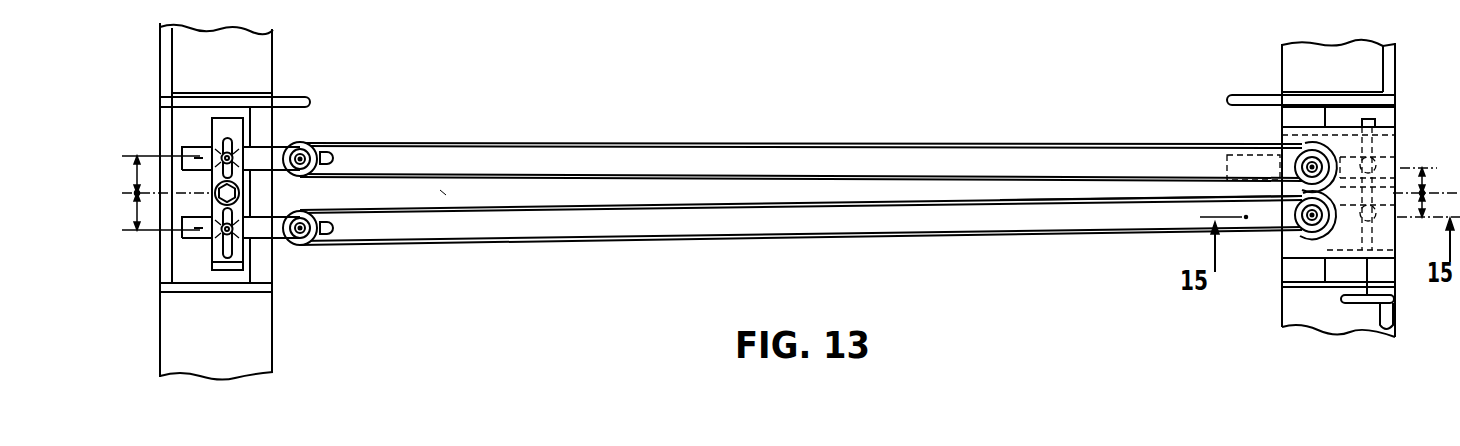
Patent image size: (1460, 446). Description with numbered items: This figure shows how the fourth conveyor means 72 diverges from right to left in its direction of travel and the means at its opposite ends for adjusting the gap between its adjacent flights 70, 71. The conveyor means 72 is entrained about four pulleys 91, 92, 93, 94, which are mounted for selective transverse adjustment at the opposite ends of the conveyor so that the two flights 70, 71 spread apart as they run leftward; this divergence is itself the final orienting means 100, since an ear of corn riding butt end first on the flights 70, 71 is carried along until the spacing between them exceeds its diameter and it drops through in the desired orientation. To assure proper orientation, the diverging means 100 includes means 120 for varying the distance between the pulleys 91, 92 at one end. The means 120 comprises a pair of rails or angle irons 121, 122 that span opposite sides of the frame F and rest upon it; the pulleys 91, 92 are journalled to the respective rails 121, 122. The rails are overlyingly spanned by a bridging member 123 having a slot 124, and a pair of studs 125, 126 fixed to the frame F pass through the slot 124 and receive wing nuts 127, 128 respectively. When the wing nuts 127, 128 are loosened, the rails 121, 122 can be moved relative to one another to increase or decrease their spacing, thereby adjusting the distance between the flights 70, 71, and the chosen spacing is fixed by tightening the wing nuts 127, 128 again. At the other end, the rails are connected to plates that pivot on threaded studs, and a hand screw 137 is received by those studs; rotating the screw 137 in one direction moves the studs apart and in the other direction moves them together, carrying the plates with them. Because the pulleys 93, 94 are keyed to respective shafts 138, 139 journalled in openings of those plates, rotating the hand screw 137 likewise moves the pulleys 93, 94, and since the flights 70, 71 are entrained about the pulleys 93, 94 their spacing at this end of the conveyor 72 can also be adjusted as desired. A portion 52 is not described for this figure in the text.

The frame F is at (270, 42).
The rail 52 is at (1140, 197).
The flight 70 is at (504, 183).
The flight 71 is at (533, 209).
The fourth conveyor means 72 is at (792, 131).
The pulley 91 is at (311, 141).
The pulley 92 is at (312, 244).
The pulley 93 is at (1327, 156).
The pulley 94 is at (1313, 238).
The final diverging orienting means 100 is at (447, 196).
The means for varying the distance between the pulleys 120 is at (156, 247).
The rail 121 is at (180, 147).
The rail 122 is at (187, 240).
The bridging member 123 is at (223, 271).
The slot 124 is at (227, 139).
The stud 125 is at (221, 157).
The stud 126 is at (236, 240).
The wing nut 127 is at (248, 147).
The wing nut 128 is at (213, 243).
The hand screw 137 is at (1363, 265).
The shaft 138 is at (1296, 163).
The shaft 139 is at (1303, 234).